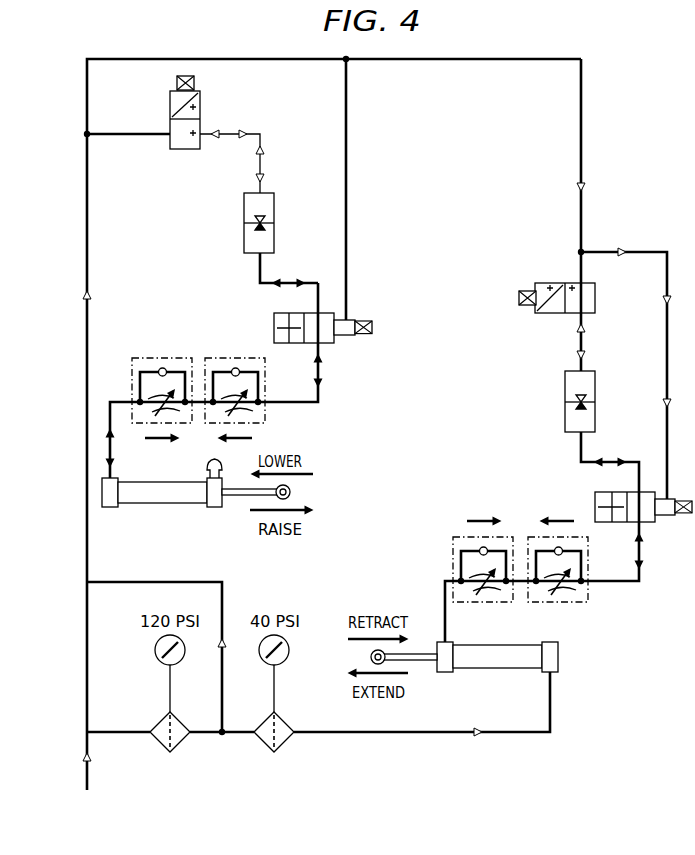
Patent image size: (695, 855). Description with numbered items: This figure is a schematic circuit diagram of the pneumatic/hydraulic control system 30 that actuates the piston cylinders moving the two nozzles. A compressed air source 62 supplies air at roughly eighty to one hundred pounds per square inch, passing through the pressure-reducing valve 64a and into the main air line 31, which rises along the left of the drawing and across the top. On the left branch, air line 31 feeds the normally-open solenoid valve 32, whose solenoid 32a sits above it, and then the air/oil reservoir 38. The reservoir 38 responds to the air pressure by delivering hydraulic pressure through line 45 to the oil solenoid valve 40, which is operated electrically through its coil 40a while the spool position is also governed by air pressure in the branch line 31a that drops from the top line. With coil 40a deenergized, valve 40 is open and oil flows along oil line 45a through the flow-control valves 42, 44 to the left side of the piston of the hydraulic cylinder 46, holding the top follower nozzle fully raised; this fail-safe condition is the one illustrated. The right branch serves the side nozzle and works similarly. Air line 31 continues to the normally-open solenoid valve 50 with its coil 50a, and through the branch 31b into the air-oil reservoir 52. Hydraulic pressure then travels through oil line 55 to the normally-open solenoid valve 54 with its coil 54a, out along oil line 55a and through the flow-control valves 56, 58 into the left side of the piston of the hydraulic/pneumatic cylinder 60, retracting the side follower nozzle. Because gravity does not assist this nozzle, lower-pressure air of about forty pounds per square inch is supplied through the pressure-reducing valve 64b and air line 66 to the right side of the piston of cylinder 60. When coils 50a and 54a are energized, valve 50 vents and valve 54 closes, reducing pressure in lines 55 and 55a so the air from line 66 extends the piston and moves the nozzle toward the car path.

The pneumatic/hydraulic control system 30 is at (641, 146).
The air line 31 is at (132, 583).
The air line 31a is at (348, 115).
The supply branch line to side follower valve 31b is at (645, 252).
The normally-open solenoid valve 32 is at (170, 105).
The solenoid of valve 32 32a is at (195, 83).
The air/oil reservoir 38 is at (244, 213).
The oil solenoid valve 40 is at (274, 323).
The coil 40a is at (367, 321).
The flow-control valve 42 is at (265, 418).
The flow-control valve 44 is at (168, 357).
The line 45 is at (318, 283).
The oil line 45a is at (320, 402).
The hydraulic cylinder 46 is at (157, 482).
The normally-open solenoid valve 50 is at (551, 283).
The coil 50a is at (519, 298).
The air-oil reservoir 52 is at (565, 389).
The normally-open solenoid valve 54 is at (595, 504).
The coil 54a is at (684, 514).
The oil line 55 is at (632, 462).
The oil line 55a is at (641, 581).
The flow-control valve 56 is at (545, 604).
The flow-control valve 58 is at (455, 540).
The hydraulic/pneumatic cylinder 60 is at (558, 660).
The compressed air source 62 is at (87, 735).
The filter/regulator (120 PSI) 64a is at (185, 745).
The pressure-reducing valve 64b is at (290, 745).
The air line 66 is at (551, 715).